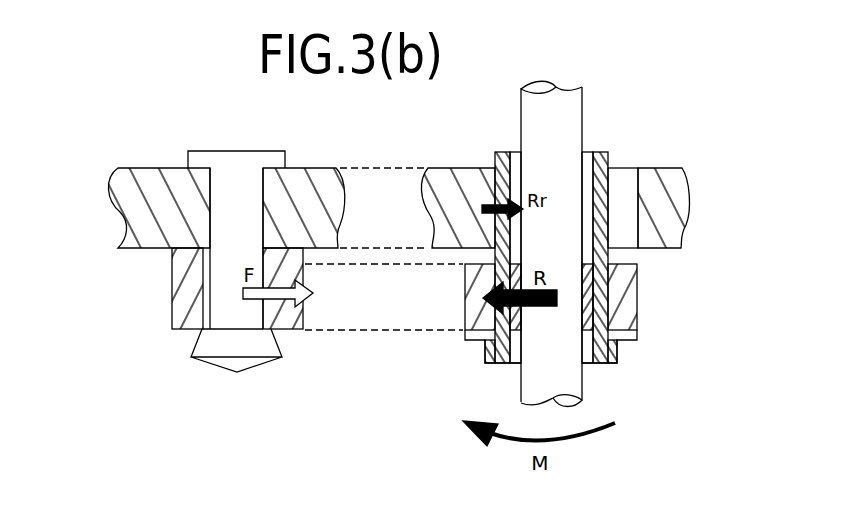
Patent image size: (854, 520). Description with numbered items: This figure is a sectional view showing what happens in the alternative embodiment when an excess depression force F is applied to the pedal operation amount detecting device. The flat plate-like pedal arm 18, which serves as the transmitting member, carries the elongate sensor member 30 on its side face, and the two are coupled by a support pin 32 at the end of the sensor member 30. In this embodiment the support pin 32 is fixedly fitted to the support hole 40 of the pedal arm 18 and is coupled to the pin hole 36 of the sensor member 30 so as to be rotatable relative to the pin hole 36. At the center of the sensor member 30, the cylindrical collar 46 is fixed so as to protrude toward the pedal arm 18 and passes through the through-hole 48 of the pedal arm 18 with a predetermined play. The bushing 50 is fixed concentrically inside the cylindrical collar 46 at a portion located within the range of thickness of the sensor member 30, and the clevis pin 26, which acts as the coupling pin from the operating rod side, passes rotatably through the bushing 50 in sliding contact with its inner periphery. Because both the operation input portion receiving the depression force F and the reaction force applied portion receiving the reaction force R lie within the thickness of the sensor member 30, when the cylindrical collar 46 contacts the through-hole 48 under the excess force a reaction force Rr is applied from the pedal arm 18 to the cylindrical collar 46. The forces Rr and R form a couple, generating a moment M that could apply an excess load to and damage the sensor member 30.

The pedal arm 18 is at (150, 212).
The clevis pin 26 is at (557, 107).
The sensor member 30 is at (188, 291).
The support pin 32 is at (228, 197).
The pin hole 36 is at (207, 310).
The support hole 40 is at (263, 172).
The cylindrical collar 46 is at (603, 205).
The through-hole 48 is at (518, 152).
The bushing 50 is at (590, 297).